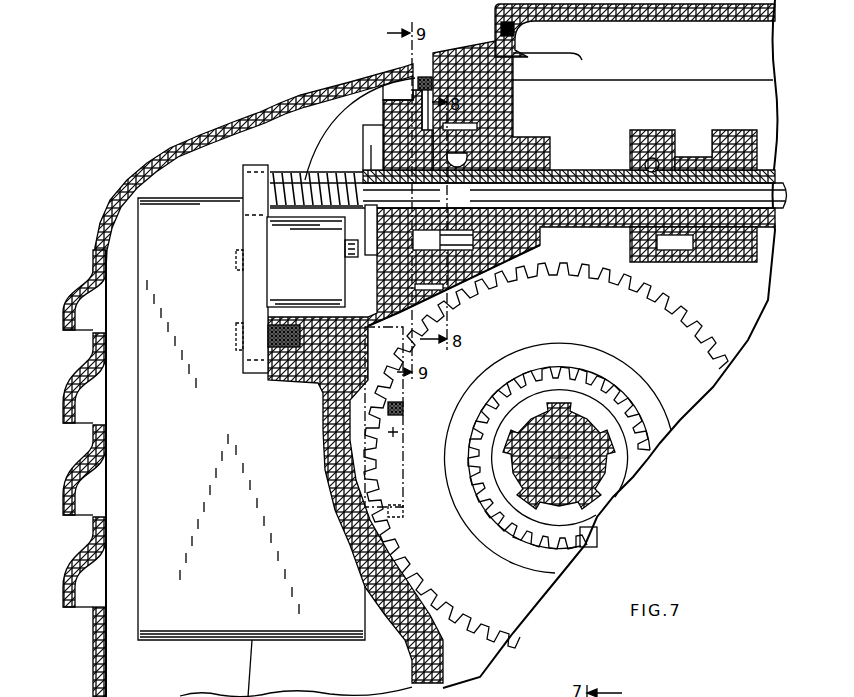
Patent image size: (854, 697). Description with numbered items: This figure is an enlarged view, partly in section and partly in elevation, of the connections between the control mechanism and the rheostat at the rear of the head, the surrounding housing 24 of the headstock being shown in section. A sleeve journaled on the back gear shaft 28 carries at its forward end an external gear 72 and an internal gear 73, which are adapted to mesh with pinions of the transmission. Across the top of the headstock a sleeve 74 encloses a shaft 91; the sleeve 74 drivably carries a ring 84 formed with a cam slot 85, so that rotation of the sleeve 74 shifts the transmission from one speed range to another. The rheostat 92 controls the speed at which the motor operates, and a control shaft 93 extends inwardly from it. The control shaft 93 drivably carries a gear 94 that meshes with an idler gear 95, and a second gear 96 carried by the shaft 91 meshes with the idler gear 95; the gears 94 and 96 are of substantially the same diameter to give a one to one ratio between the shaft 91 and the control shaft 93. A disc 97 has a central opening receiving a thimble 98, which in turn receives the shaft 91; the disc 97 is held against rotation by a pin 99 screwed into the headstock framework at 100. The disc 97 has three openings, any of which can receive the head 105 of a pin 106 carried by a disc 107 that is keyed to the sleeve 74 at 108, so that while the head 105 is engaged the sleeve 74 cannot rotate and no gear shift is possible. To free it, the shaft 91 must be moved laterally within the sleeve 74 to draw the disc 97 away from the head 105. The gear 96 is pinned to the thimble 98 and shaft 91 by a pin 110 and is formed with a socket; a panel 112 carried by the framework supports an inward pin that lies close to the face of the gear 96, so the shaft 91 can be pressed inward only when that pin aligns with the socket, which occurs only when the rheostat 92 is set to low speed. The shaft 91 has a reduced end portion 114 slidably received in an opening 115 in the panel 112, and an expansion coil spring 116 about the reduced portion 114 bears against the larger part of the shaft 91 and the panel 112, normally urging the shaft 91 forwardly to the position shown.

The housing 24 is at (750, 322).
The back gear shaft 28 is at (577, 432).
The external gear 72 is at (697, 318).
The internal gear 73 is at (560, 373).
The sleeve 74 is at (598, 177).
The ring 84 is at (738, 140).
The cam slot 85 is at (695, 156).
The shaft 91 is at (620, 201).
The rheostat 92 is at (260, 531).
The control shaft 93 is at (393, 432).
The gear 94 is at (400, 513).
The idler gear 95 is at (377, 323).
The second gear 96 is at (395, 100).
The disc 97 is at (491, 105).
The thimble 98 is at (385, 195).
The pin 99 is at (427, 110).
The screwed connection 100 is at (416, 77).
The head 105 is at (436, 253).
The pin 106 is at (473, 238).
The disc 107 is at (503, 128).
The key 108 is at (470, 157).
The pin 110 is at (372, 150).
The panel 112 is at (248, 291).
The reduced end portion 114 is at (279, 187).
The opening 115 is at (247, 200).
The expansion coil spring 116 is at (310, 181).